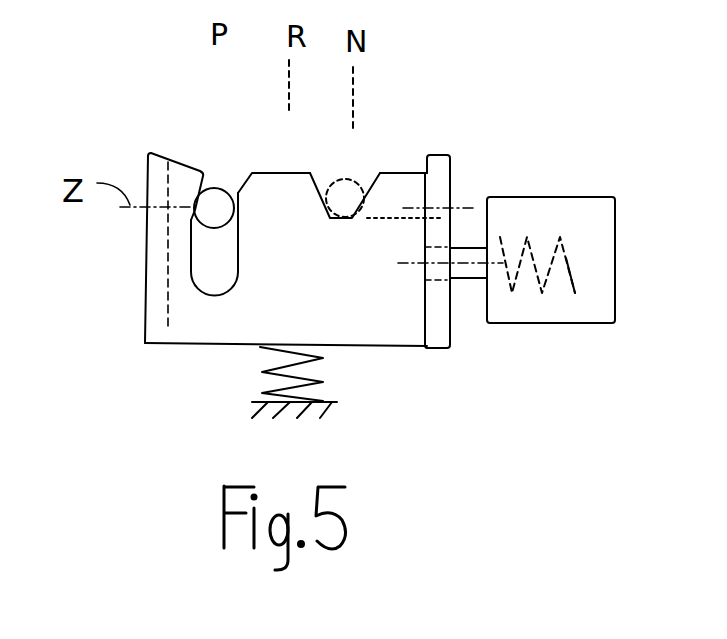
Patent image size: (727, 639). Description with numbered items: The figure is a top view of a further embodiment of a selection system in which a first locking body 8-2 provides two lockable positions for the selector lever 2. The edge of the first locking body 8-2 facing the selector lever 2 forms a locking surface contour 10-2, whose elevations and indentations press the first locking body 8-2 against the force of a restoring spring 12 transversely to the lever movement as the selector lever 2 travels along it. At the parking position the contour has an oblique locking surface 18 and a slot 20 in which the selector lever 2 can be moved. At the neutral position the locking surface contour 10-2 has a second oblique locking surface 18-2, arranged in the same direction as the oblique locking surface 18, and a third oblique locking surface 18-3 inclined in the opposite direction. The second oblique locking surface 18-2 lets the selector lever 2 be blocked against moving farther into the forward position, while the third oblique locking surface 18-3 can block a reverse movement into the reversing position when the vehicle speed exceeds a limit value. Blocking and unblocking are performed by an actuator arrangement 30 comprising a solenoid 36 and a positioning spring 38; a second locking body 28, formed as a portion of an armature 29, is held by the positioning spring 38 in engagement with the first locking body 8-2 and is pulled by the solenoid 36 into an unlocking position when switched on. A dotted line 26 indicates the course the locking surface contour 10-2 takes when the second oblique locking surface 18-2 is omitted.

The selector lever 2 is at (217, 188).
The first locking body 8-2 is at (178, 333).
The locking surface contour 10-2 is at (180, 167).
The restoring spring 12 is at (265, 377).
The oblique locking surface 18 is at (251, 176).
The second oblique locking surface 18-2 is at (376, 176).
The third oblique locking surface 18-3 is at (322, 182).
The slot 20 is at (187, 250).
The actuating line 26 is at (383, 218).
The second locking body 28 is at (475, 278).
The armature 29 is at (454, 278).
The actuator arrangement 30 is at (542, 225).
The solenoid 36 is at (608, 220).
The positioning spring 38 is at (575, 293).